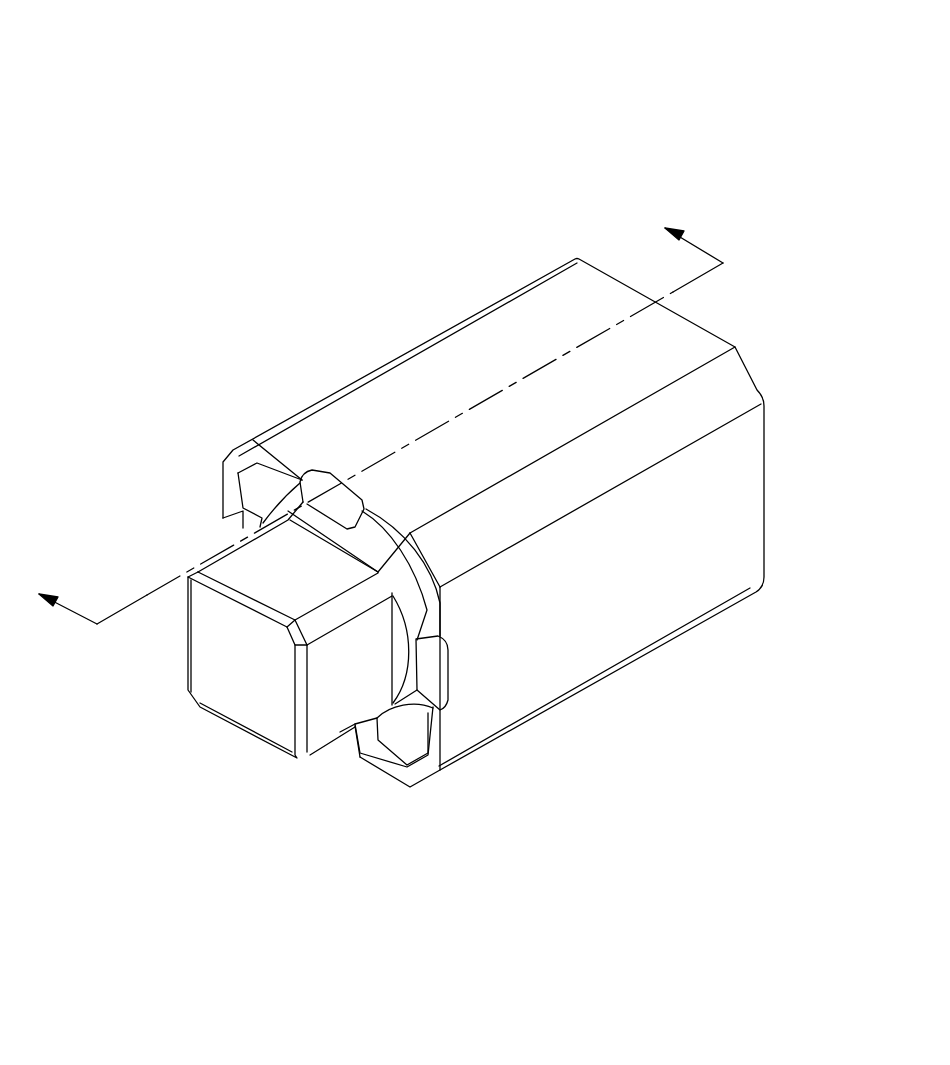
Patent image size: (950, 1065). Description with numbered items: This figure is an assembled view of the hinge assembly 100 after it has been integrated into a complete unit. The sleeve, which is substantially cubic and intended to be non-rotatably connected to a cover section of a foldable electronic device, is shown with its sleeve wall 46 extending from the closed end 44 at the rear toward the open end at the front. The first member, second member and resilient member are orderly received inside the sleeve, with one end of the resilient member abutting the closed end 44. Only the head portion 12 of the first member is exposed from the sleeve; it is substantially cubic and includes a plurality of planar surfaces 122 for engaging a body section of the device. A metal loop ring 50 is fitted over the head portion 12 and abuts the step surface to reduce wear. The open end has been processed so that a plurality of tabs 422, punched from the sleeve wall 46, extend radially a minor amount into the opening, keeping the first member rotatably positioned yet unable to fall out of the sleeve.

The hinge assembly 100 is at (315, 47).
The head portion 12 is at (232, 672).
The planar surfaces 122 is at (328, 713).
The closed end 44 is at (766, 486).
The sleeve wall 46 is at (507, 355).
The loop ring 50 is at (283, 497).
The tab 422 is at (432, 662).